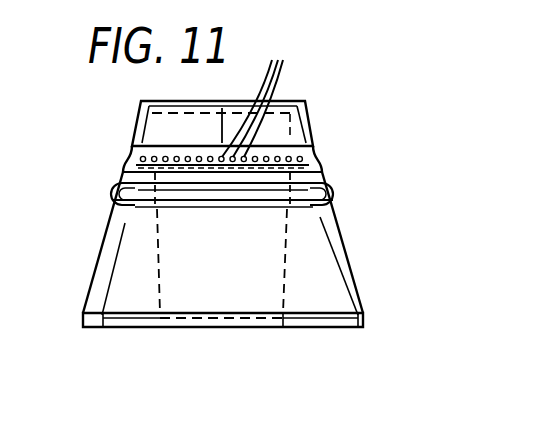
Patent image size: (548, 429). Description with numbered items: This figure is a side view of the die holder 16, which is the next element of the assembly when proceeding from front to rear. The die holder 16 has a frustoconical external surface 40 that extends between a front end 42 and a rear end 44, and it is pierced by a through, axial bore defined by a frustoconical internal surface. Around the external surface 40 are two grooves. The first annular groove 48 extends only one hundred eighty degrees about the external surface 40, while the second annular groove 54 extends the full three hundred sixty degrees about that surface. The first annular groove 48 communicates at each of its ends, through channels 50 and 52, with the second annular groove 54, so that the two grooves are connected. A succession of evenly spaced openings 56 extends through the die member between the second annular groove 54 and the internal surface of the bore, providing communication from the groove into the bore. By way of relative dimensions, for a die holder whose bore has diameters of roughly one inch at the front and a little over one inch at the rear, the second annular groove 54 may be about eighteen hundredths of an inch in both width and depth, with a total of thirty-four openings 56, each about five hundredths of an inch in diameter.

The die holder 16 is at (84, 271).
The frustoconical external surface 40 is at (117, 237).
The front end 42 is at (123, 328).
The rear end 44 is at (288, 100).
The first annular groove 48 is at (251, 199).
The channel 50 is at (116, 194).
The channel 52 is at (333, 198).
The second annular groove 54 is at (317, 160).
The openings 56 is at (267, 94).